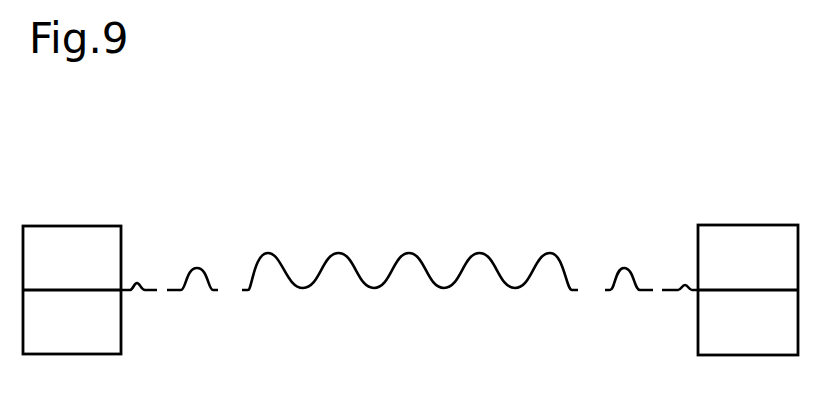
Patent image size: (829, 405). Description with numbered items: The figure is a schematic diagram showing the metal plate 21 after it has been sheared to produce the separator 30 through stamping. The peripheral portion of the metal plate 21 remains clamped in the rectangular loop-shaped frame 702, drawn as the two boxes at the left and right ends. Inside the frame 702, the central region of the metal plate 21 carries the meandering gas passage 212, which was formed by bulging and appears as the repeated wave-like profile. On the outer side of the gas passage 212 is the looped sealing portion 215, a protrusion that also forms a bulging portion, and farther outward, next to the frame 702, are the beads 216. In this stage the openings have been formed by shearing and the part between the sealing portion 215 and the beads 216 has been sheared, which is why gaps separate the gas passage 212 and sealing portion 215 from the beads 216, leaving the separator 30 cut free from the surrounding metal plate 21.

The frame 702 is at (73, 226).
The beads 216 is at (135, 289).
The looped sealing portion 215 is at (197, 268).
The gas passage 212 is at (268, 253).
The separator 30 is at (413, 253).
The metal plate 21 is at (483, 254).